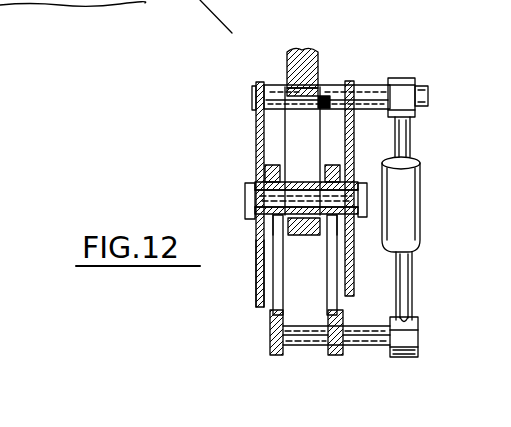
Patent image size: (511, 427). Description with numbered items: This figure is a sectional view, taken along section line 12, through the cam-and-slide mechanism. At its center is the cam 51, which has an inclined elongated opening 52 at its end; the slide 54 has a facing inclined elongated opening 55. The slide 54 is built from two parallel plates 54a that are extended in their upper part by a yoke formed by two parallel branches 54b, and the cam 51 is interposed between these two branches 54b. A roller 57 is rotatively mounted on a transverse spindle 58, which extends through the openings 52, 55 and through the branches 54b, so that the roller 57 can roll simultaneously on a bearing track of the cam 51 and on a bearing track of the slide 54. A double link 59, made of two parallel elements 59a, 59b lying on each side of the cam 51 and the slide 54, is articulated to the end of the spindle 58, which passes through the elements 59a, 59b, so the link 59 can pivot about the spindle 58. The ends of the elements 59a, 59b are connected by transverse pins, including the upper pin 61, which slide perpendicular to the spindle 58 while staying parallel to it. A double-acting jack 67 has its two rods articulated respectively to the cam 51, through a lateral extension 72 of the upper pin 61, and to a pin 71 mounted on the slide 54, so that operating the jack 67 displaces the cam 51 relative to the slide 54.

The sectional view line 12 is at (213, 20).
The cam 51 is at (309, 50).
The elongated opening 52 is at (307, 117).
The slide 54 is at (255, 321).
The parallel plates 54a is at (330, 352).
The parallel branches 54b is at (257, 152).
The elongated opening 55 is at (277, 277).
The roller 57 is at (312, 164).
The transverse spindle 58 is at (262, 200).
The double link 59 is at (254, 141).
The link element 59a is at (253, 257).
The link element 59b is at (398, 281).
The upper transverse pin 61 is at (327, 96).
The double-acting jack 67 is at (424, 197).
The pin 71 is at (402, 309).
The lateral extension 72 is at (427, 84).